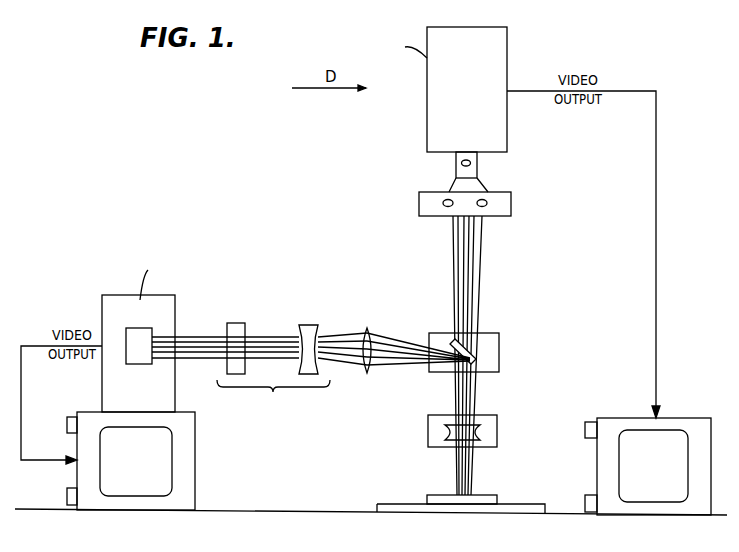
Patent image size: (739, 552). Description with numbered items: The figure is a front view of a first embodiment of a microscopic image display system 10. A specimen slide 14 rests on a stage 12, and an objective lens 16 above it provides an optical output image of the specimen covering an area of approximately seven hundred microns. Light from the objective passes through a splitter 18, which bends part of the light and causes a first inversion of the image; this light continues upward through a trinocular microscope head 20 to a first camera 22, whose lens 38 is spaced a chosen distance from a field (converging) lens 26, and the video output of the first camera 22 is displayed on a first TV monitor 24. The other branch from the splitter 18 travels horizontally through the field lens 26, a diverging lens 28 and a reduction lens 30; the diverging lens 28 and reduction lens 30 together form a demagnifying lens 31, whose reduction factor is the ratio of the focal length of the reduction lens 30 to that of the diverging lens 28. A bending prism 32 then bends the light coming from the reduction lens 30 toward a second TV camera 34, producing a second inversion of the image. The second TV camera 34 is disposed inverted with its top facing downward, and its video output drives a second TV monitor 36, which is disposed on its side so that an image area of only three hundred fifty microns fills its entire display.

The microscopic image display system 10 is at (620, 54).
The stage 12 is at (485, 514).
The specimen slide 14 is at (486, 496).
The objective lens 16 is at (480, 432).
The splitter 18 is at (473, 362).
The trinocular microscope head 20 is at (511, 206).
The first camera 22 is at (500, 58).
The first TV monitor 24 is at (683, 418).
The field (converging) lens 26 is at (370, 329).
The diverging lens 28 is at (310, 325).
The reduction lens 30 is at (236, 324).
The demagnifying lens 31 is at (273, 395).
The bending prism 32 is at (152, 363).
The second TV camera 34 is at (108, 312).
The second TV monitor 36 is at (185, 450).
The lens of camera 38 is at (471, 164).